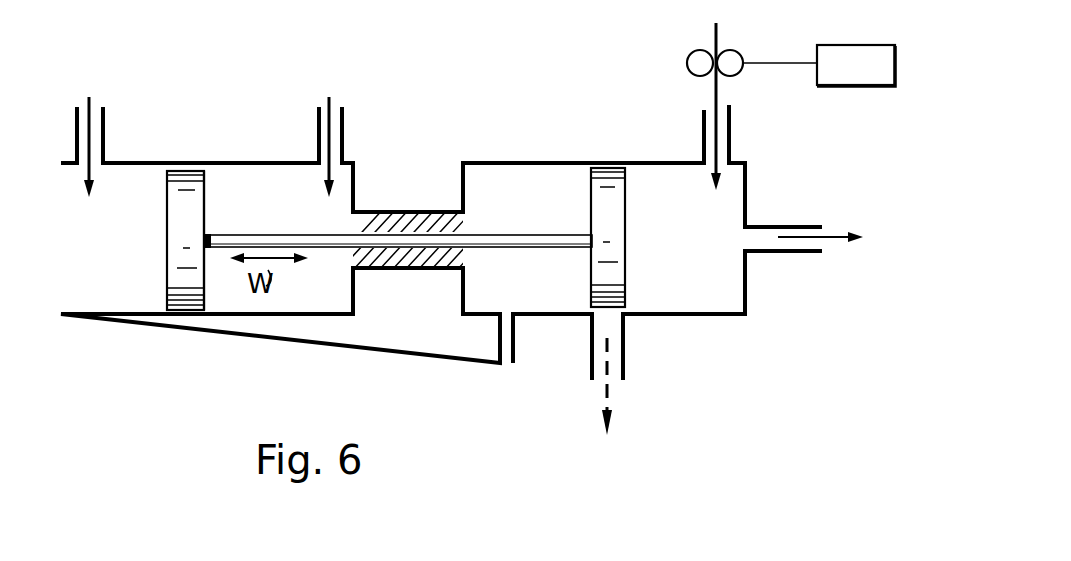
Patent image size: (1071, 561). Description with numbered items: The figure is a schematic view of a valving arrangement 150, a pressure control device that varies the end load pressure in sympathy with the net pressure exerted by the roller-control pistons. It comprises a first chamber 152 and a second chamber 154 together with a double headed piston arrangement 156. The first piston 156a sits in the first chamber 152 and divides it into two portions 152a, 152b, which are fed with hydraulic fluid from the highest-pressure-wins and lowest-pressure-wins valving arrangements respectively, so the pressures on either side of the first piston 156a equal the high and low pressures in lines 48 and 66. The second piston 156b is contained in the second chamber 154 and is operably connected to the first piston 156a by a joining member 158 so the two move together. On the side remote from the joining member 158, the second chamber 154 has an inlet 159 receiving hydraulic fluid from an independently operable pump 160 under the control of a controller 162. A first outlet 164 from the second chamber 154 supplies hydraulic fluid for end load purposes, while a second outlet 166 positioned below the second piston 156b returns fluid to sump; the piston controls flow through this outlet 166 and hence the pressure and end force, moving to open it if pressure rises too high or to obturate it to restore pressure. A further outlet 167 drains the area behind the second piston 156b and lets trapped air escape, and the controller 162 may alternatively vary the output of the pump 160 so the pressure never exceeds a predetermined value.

The high pressure line 48 is at (89, 129).
The low pressure line 66 is at (330, 129).
The valving arrangement 150 is at (428, 78).
The first chamber 152 is at (213, 317).
The first portion of first chamber 152a is at (120, 297).
The second portion of first chamber 152b is at (290, 297).
The second chamber 154 is at (668, 318).
The double headed piston arrangement 156 is at (150, 188).
The first piston 156a is at (195, 197).
The second piston 156b is at (590, 193).
The joining member 158 is at (513, 237).
The inlet 159 is at (703, 123).
The pump 160 is at (740, 50).
The controller 162 is at (842, 43).
The first outlet 164 is at (787, 227).
The second outlet 166 is at (592, 347).
The further outlet 167 is at (500, 347).